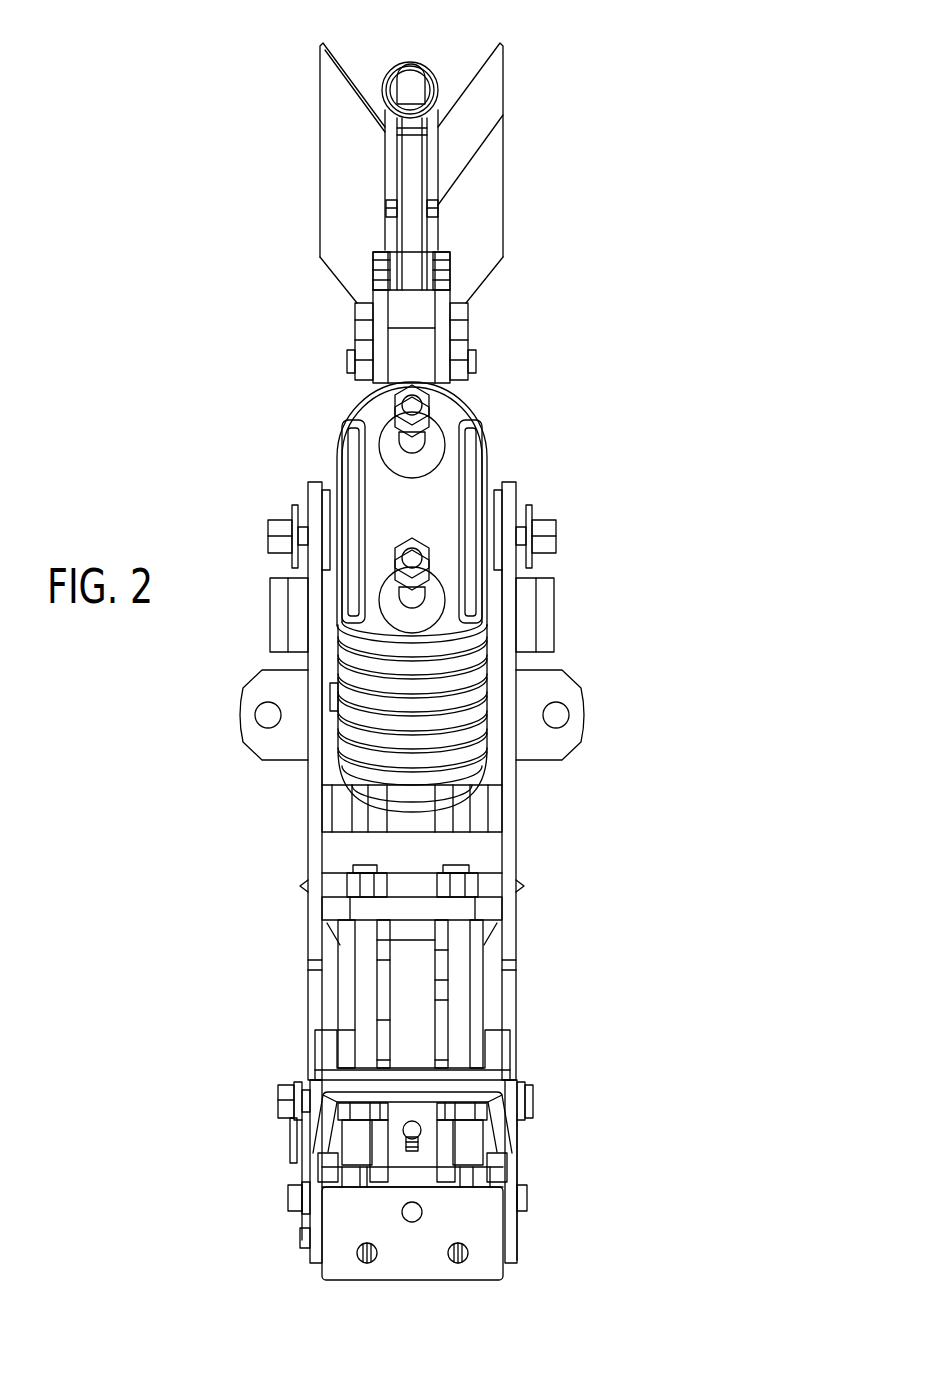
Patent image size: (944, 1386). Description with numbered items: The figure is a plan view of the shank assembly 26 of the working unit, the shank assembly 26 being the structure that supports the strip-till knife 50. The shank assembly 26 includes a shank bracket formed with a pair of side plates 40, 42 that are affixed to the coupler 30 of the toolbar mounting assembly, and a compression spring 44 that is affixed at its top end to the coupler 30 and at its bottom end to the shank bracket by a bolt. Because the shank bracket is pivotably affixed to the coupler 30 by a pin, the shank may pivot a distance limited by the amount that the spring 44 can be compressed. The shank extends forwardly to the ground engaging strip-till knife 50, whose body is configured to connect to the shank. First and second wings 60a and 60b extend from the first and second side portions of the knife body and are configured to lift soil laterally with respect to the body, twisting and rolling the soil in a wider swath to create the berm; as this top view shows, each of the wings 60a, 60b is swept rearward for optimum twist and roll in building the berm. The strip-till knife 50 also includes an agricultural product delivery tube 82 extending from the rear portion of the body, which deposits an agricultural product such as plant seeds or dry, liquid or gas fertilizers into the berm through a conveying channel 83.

The shank assembly 26 is at (608, 153).
The coupler 30 is at (490, 1207).
The side plate 40 is at (307, 833).
The side plate 42 is at (517, 833).
The compression spring 44 is at (487, 692).
The strip-till knife 50 is at (493, 328).
The first wing 60a is at (492, 223).
The second wing 60b is at (330, 220).
The agricultural product delivery tube 82 is at (377, 70).
The conveying channel 83 is at (410, 80).